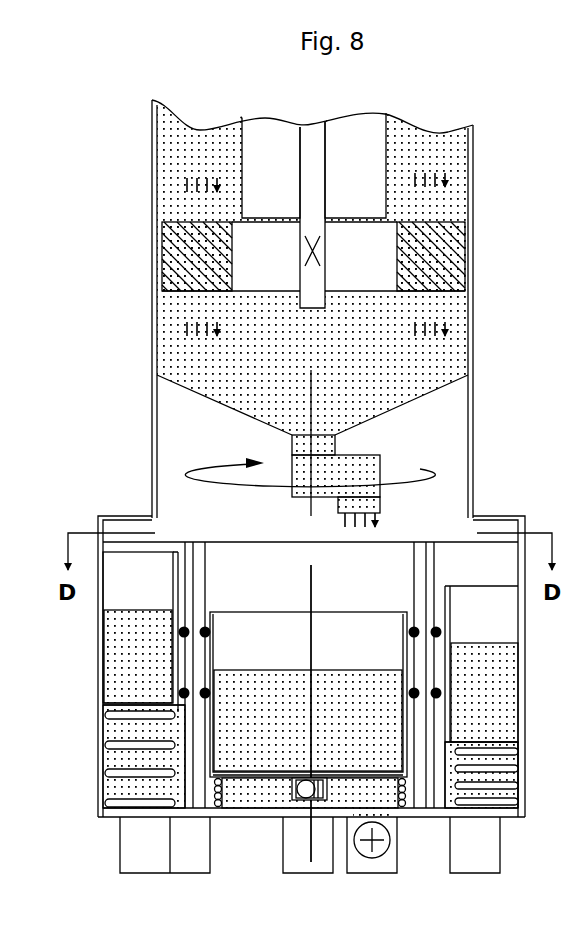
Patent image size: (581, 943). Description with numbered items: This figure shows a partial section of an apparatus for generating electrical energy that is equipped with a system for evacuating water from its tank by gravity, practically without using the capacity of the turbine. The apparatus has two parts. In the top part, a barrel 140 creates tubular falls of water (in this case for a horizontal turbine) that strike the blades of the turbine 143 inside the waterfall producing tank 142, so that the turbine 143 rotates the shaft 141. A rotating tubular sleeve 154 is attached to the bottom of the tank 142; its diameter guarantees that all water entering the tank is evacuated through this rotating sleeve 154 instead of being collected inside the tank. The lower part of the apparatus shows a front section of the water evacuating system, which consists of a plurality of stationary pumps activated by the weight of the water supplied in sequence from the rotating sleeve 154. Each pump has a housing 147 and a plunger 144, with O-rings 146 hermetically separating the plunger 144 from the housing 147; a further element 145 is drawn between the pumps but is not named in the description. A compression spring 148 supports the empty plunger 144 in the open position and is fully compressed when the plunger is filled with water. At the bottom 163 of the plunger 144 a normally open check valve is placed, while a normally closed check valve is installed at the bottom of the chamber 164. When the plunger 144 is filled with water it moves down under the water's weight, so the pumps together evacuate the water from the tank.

The barrel 140 is at (250, 123).
The shaft 141 is at (330, 130).
The waterfall producing tank 142 is at (473, 192).
The turbine 143 is at (462, 270).
The rotating tubular sleeve 154 is at (382, 500).
The plunger 144 is at (342, 680).
The partition pipes 145 is at (380, 675).
The O-rings 146 is at (395, 713).
The housing 147 is at (580, 716).
The bottom of the plunger 163 is at (517, 775).
The compression spring 148 is at (398, 795).
The chamber 164 is at (350, 843).